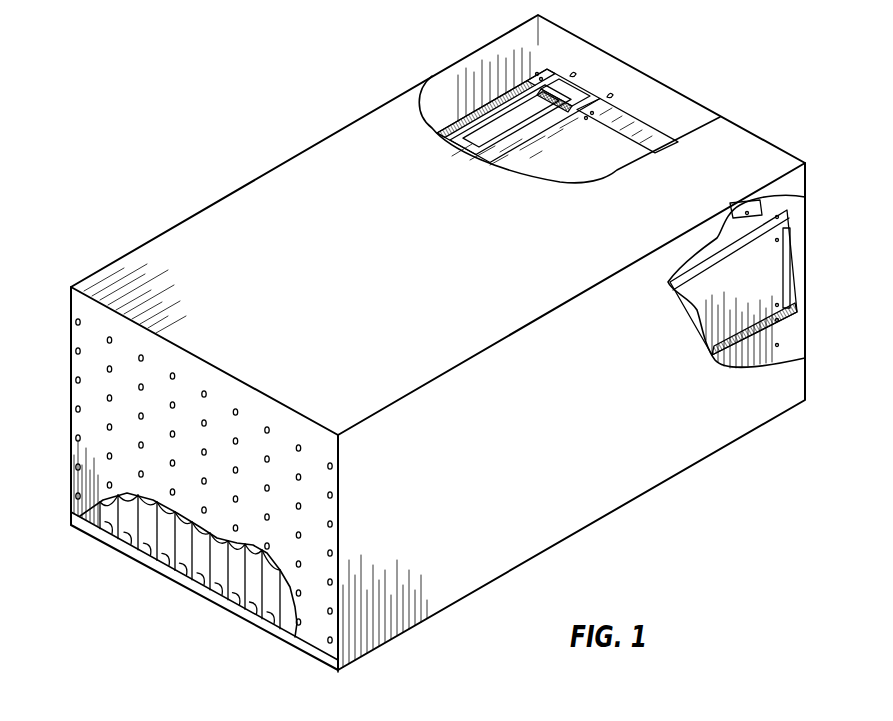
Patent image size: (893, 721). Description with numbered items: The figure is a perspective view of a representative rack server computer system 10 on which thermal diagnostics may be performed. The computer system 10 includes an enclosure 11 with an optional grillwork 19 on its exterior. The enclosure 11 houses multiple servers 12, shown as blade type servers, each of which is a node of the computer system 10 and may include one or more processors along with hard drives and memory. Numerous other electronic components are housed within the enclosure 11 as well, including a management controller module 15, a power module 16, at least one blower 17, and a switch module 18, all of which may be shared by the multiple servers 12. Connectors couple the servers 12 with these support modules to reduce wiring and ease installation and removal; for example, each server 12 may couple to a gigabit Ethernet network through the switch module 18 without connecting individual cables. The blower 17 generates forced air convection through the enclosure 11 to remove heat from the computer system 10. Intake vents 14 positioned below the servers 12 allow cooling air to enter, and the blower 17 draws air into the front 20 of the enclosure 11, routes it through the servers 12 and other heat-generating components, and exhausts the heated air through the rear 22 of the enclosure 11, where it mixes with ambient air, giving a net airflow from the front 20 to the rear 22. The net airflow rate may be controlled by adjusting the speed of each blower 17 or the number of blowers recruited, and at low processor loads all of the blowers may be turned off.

The rack server system 10 is at (216, 110).
The enclosure 11 is at (183, 240).
The servers 12 is at (267, 533).
The intake vents 14 is at (290, 597).
The management controller module 15 is at (493, 97).
The power module 16 is at (570, 88).
The blower 17 is at (601, 163).
The switch module 18 is at (763, 281).
The grillwork 19 is at (87, 369).
The front 20 is at (245, 548).
The rear 22 is at (720, 117).